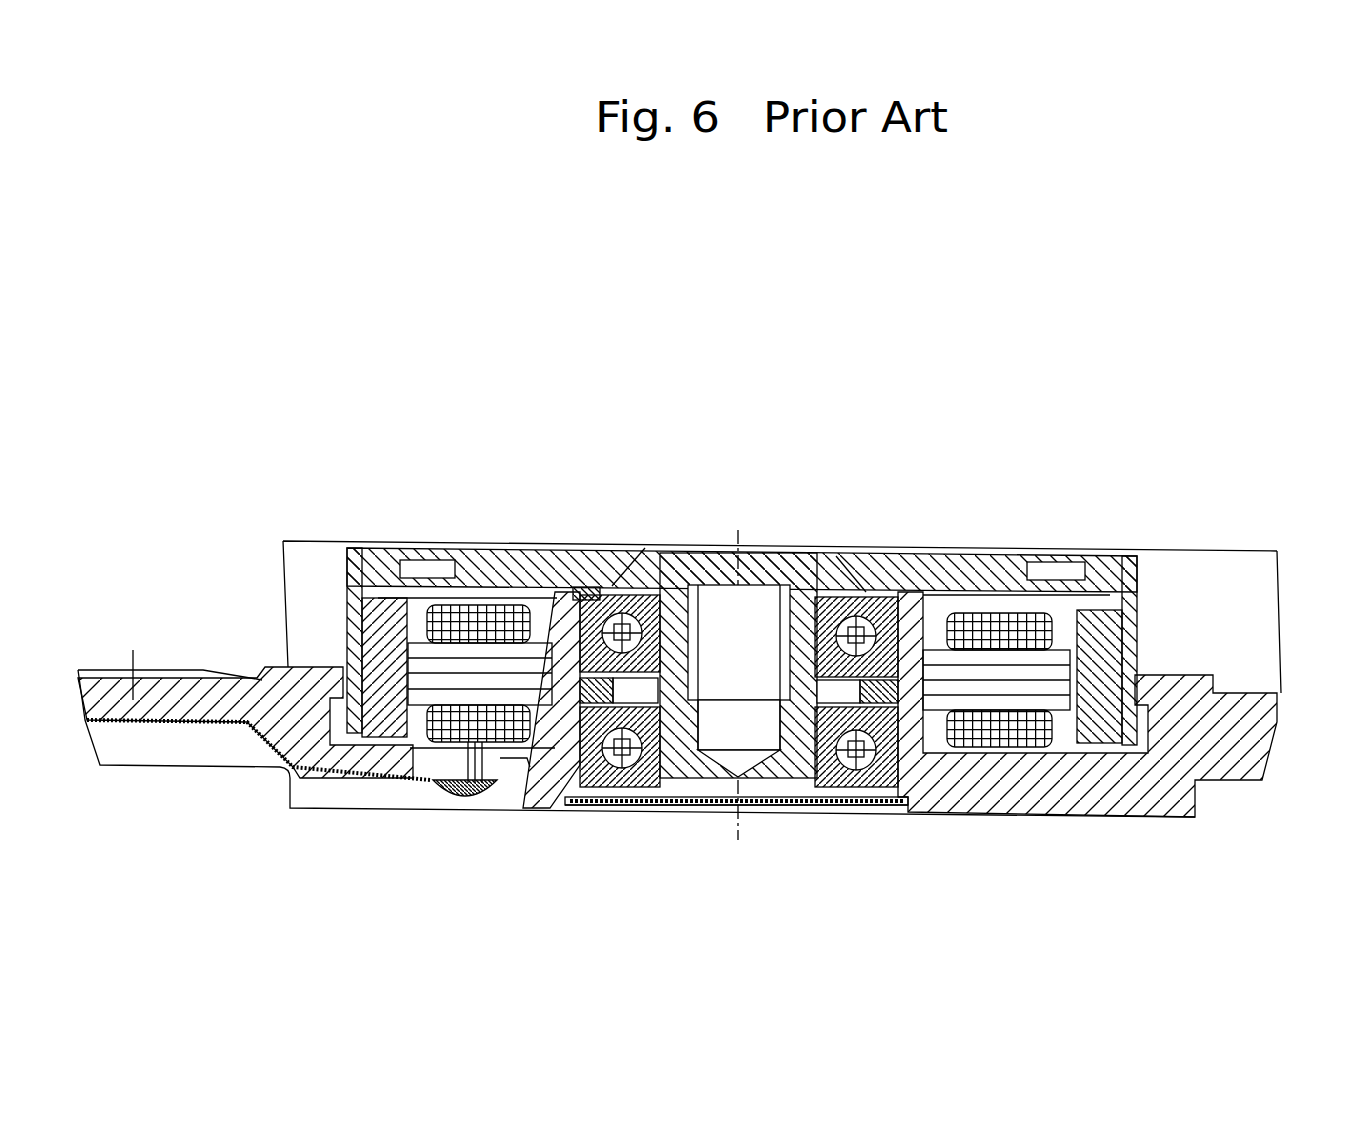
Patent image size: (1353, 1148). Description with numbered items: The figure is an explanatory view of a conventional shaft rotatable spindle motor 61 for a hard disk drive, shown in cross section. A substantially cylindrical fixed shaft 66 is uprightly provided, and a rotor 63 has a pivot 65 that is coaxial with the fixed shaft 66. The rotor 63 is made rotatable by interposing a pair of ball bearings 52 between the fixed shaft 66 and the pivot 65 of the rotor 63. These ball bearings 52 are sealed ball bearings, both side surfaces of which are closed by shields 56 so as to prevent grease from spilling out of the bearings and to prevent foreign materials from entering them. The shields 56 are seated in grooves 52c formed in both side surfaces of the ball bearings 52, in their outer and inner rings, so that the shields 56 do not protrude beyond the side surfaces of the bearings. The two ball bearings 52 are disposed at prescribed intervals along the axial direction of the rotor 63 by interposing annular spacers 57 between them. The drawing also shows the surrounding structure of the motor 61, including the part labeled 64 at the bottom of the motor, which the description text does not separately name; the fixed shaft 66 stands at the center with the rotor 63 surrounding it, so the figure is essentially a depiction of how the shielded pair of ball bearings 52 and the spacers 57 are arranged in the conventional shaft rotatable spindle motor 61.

The ball bearings 52 is at (648, 553).
The grooves 52c is at (558, 635).
The shields 56 is at (783, 592).
The annular spacers 57 is at (905, 600).
The shaft rotatable spindle motor 61 is at (907, 482).
The rotor 63 is at (1109, 546).
The base 64 is at (677, 764).
The pivot 65 is at (784, 813).
The fixed shaft 66 is at (914, 745).